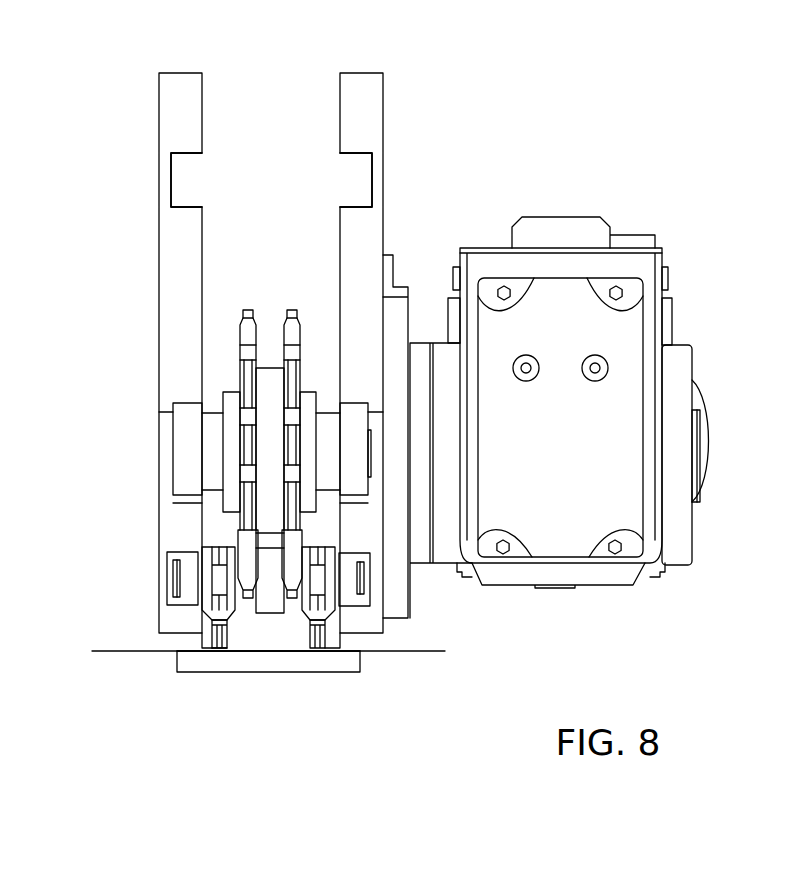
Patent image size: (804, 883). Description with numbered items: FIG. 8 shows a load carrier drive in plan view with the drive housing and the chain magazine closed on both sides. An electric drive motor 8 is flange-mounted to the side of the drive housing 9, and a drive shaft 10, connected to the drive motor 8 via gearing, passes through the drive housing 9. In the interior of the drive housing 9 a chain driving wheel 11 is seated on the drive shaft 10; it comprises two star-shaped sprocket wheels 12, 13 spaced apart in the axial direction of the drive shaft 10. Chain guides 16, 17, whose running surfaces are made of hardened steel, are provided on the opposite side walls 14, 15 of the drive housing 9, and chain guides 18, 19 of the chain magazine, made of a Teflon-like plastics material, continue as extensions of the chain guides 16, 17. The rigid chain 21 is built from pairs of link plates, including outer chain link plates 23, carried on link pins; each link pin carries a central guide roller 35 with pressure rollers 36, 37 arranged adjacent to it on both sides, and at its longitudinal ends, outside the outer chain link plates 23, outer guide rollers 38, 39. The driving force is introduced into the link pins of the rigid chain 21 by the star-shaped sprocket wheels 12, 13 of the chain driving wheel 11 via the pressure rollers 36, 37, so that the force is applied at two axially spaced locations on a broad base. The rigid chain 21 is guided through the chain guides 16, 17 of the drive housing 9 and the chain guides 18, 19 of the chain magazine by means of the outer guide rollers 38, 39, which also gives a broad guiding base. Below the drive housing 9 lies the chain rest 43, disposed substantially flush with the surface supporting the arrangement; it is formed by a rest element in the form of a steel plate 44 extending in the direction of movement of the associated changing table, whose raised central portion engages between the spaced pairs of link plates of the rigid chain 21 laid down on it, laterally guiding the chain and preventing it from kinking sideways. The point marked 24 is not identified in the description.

The drive motor 8 is at (548, 437).
The drive housing 9 is at (410, 110).
The drive shaft 10 is at (162, 453).
The chain driving wheel 11 is at (222, 372).
The star-shaped sprocket wheel 12 is at (245, 337).
The star-shaped sprocket wheel 13 is at (289, 310).
The side wall 14 is at (180, 82).
The side wall 15 is at (363, 82).
The chain guide 16 is at (180, 183).
The chain guide 17 is at (360, 183).
The chain guide 18 is at (186, 180).
The chain guide 19 is at (356, 180).
The rigid chain 21 is at (202, 536).
The outer chain link plate 23 is at (200, 640).
The contact point 24 is at (221, 658).
The central guide roller 35 is at (270, 602).
The pressure roller 36 is at (289, 599).
The pressure roller 37 is at (250, 598).
The outer guide roller 38 is at (350, 595).
The outer guide roller 39 is at (183, 563).
The chain rest 43 is at (351, 688).
The steel plate 44 is at (355, 663).